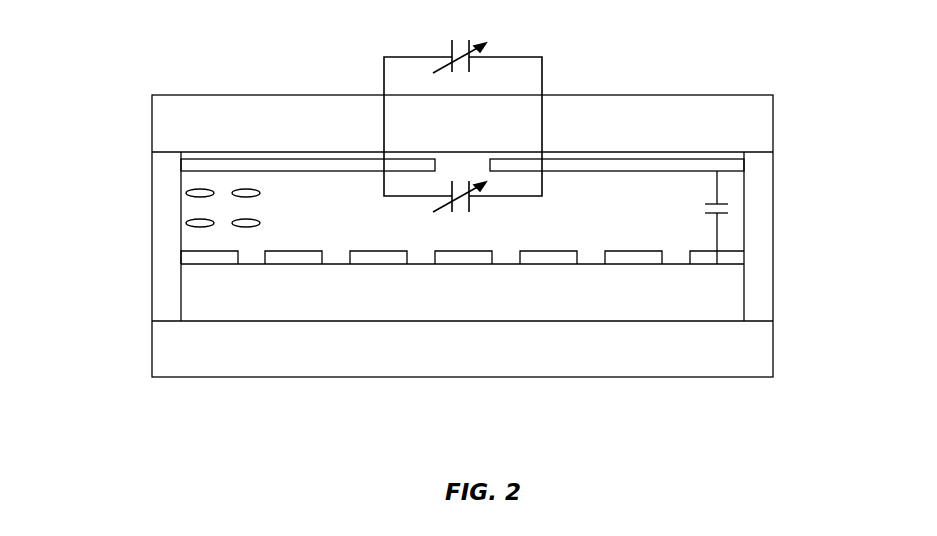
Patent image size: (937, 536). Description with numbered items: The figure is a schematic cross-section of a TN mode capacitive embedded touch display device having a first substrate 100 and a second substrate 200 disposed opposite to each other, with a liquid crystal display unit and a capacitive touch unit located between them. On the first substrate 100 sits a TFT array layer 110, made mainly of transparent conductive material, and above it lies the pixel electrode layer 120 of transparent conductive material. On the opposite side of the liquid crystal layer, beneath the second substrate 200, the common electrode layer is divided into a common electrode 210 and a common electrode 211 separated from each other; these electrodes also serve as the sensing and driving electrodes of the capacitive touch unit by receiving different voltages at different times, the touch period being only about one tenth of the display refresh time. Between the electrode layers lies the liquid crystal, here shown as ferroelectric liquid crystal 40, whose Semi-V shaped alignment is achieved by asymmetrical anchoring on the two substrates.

The ferroelectric liquid crystal 40 is at (190, 192).
The first substrate 100 is at (740, 352).
The TFT array layer 110 is at (728, 300).
The pixel electrode layer 120 is at (730, 260).
The second substrate 200 is at (740, 125).
The common electrode 210 is at (318, 167).
The common electrode 211 is at (723, 168).